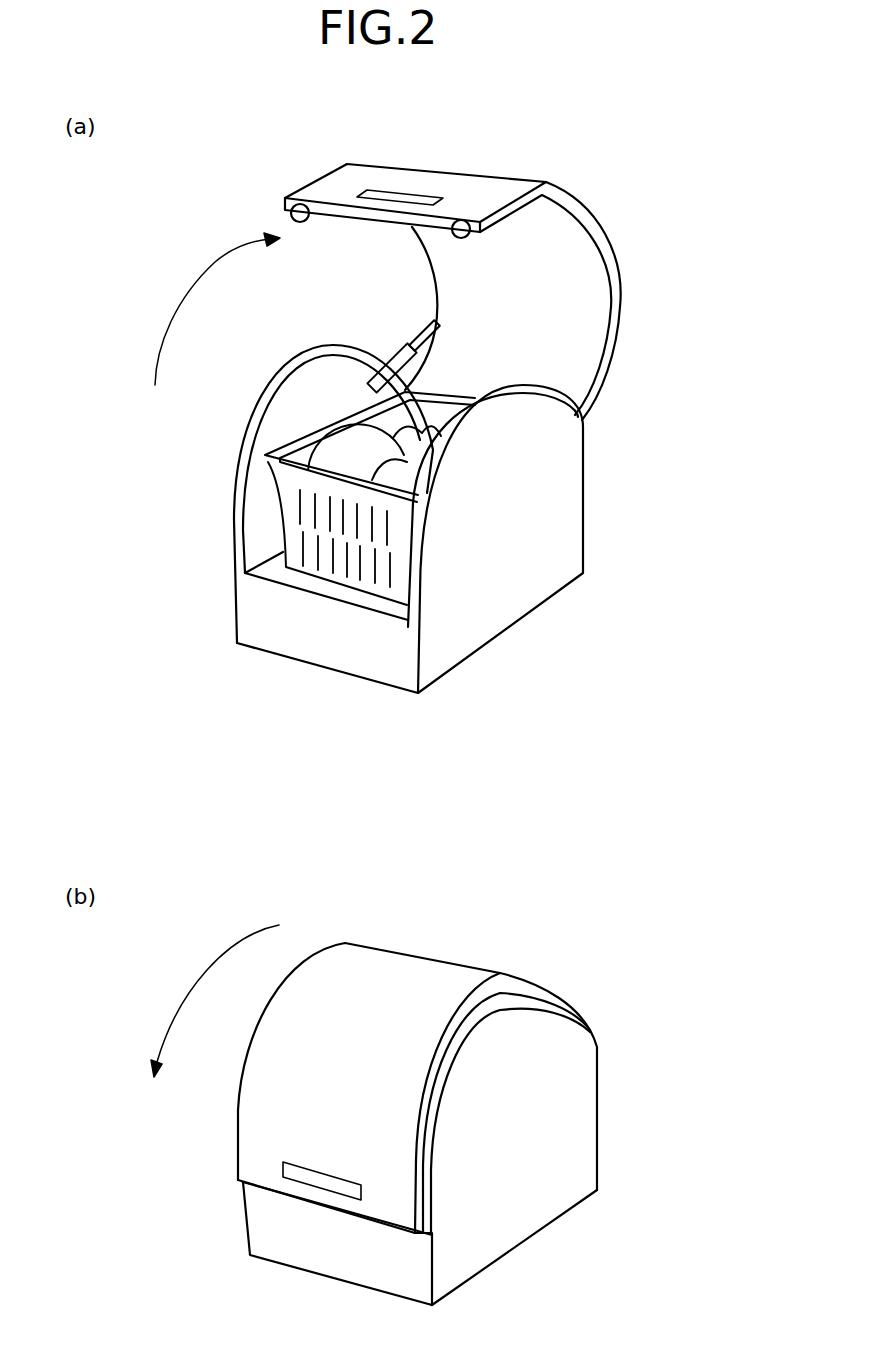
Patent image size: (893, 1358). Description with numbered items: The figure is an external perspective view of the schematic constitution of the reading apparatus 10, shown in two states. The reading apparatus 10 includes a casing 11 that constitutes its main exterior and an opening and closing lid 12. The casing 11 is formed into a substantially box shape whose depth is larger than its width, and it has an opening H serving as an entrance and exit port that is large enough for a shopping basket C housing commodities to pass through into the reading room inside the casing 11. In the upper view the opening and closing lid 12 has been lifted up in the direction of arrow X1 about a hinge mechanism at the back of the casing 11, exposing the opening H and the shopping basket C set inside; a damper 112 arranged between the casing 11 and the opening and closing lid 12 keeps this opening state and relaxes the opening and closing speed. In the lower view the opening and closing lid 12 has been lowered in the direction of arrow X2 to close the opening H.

The reading apparatus 10 is at (617, 187).
The casing 11 is at (516, 607).
The opening and closing lid 12 is at (460, 184).
The damper 112 is at (420, 328).
The opening H is at (293, 401).
The shopping basket C is at (326, 557).
The arrow X1 is at (217, 309).
The arrow X2 is at (215, 1001).